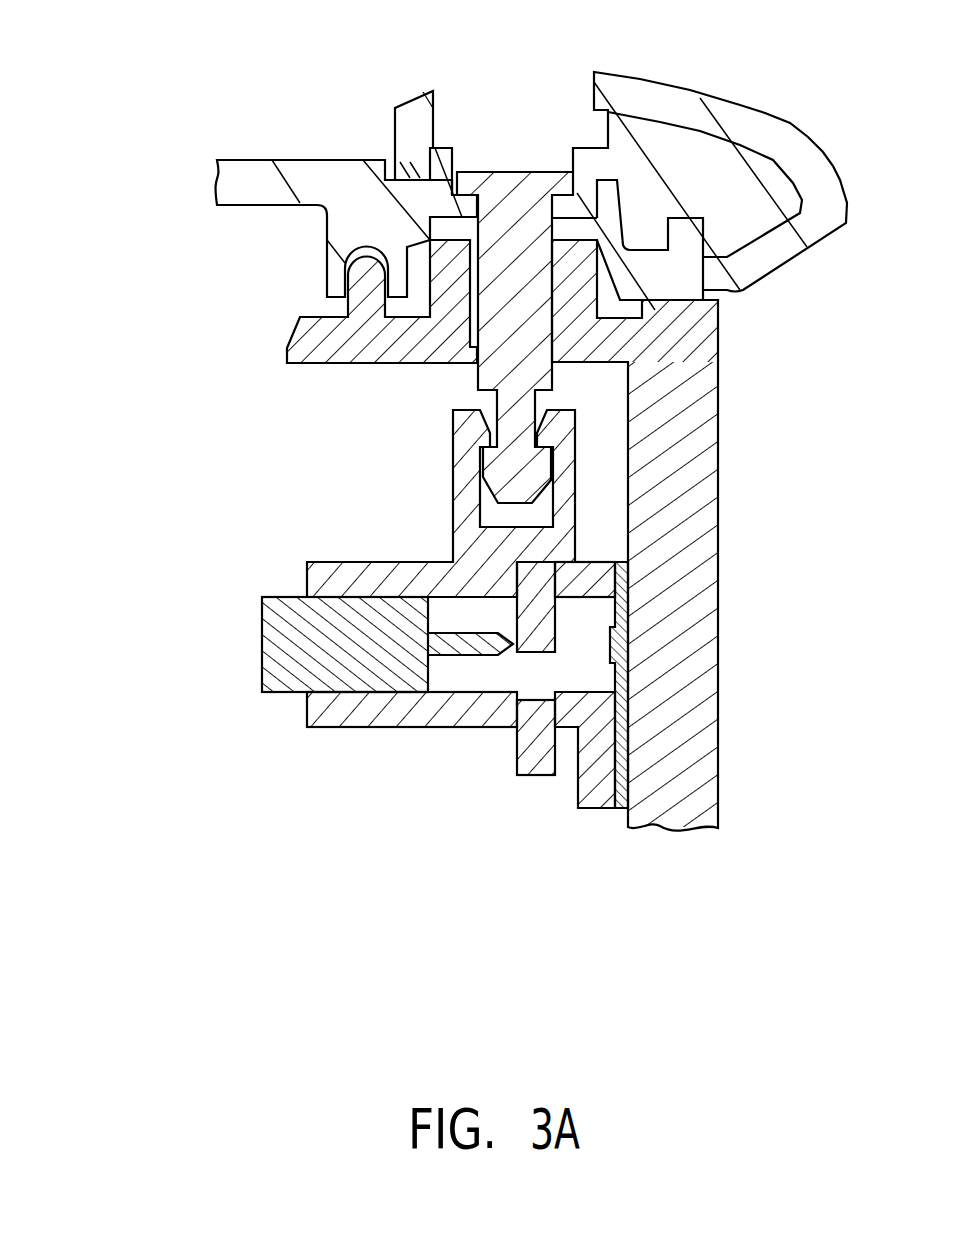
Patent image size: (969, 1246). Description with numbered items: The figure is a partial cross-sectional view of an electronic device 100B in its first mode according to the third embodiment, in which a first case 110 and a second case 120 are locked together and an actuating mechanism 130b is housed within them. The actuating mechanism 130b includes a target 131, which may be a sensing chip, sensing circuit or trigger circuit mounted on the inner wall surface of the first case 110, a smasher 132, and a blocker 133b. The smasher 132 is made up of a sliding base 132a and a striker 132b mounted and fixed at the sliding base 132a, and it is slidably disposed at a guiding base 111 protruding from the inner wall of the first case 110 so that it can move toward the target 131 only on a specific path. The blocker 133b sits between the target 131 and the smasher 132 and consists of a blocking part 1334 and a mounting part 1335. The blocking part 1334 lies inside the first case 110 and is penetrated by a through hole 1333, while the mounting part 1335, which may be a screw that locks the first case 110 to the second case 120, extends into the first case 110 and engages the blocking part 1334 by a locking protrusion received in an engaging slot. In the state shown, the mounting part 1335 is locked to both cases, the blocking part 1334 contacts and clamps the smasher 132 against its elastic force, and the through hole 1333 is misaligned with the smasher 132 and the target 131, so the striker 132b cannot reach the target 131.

The electronic device 100B is at (888, 1009).
The first case 110 is at (706, 520).
The guiding base 111 is at (357, 582).
The second case 120 is at (307, 183).
The actuating mechanism 130b is at (150, 565).
The target 131 is at (623, 647).
The smasher 132 is at (295, 719).
The sliding base 132a is at (282, 652).
The striker 132b is at (458, 646).
The blocker 133b is at (671, 442).
The through hole 1333 is at (533, 685).
The blocking part 1334 is at (540, 618).
The mounting part 1335 is at (515, 207).